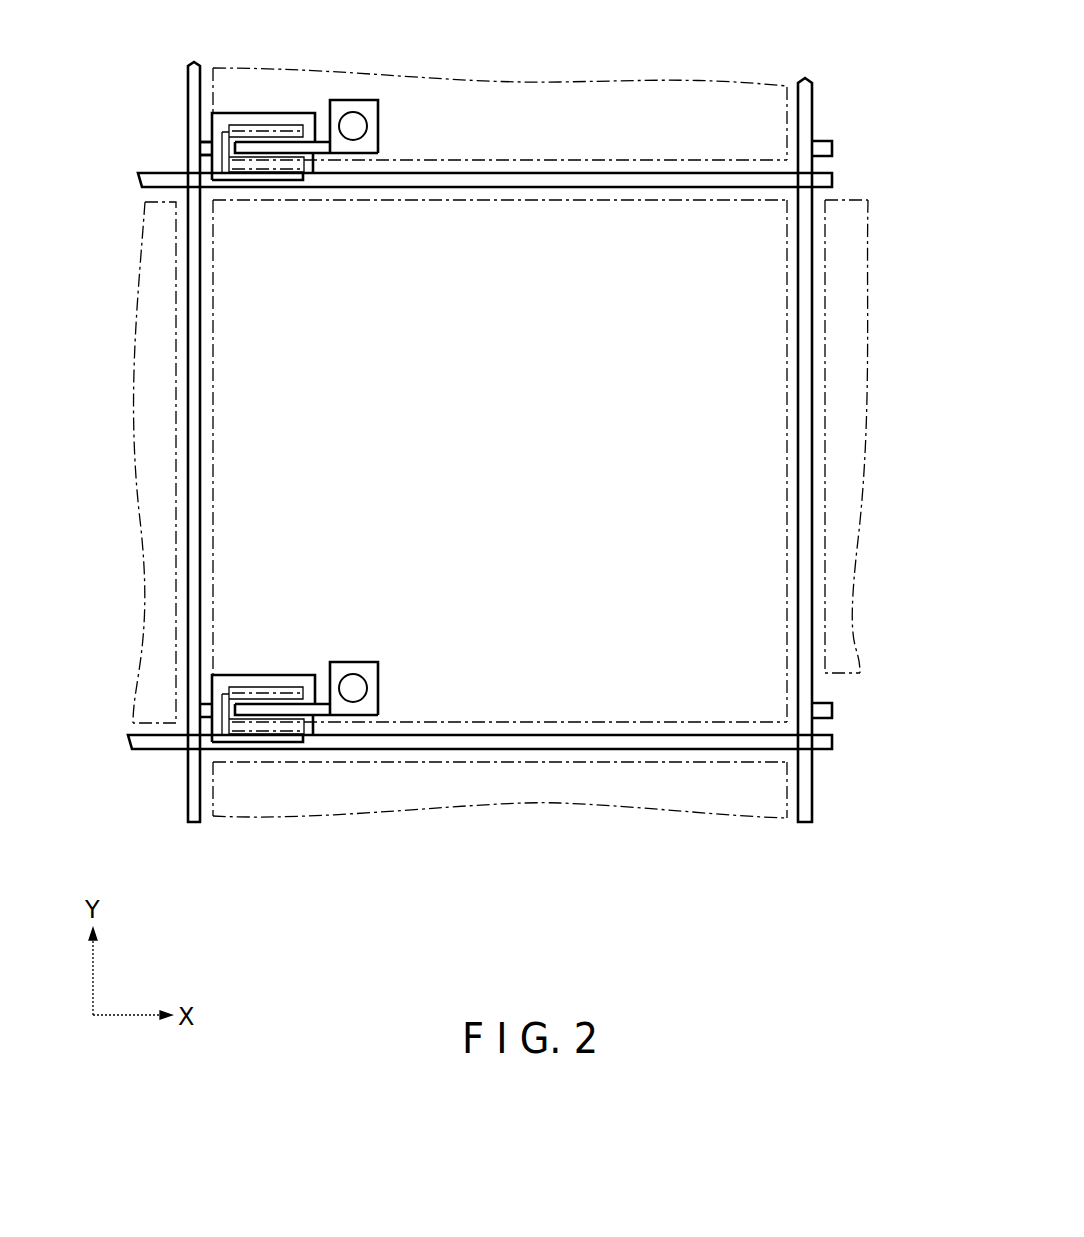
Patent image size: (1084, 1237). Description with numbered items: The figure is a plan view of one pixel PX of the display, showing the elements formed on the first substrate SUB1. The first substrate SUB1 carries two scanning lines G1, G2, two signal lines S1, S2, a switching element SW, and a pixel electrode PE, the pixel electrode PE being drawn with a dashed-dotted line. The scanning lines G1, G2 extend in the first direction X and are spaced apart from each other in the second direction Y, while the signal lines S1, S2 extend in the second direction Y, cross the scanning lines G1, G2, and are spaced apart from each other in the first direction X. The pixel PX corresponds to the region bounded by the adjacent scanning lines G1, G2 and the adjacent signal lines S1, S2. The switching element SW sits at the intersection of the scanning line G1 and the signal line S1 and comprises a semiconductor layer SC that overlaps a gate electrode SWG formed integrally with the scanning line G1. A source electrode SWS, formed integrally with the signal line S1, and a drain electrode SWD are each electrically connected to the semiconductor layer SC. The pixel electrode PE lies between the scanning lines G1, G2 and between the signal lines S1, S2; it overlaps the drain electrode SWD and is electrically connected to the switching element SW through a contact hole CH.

The first substrate SUB1 is at (841, 73).
The scanning line G2 is at (738, 173).
The scanning line G1 is at (592, 742).
The pixel PX is at (748, 262).
The pixel electrode PE is at (787, 436).
The signal line S1 is at (192, 781).
The signal line S2 is at (806, 782).
The gate electrode SWG is at (262, 674).
The semiconductor layer SC is at (215, 690).
The source electrode SWS is at (246, 738).
The drain electrode SWD is at (277, 712).
The switching element SW is at (243, 766).
The contact hole CH is at (368, 686).